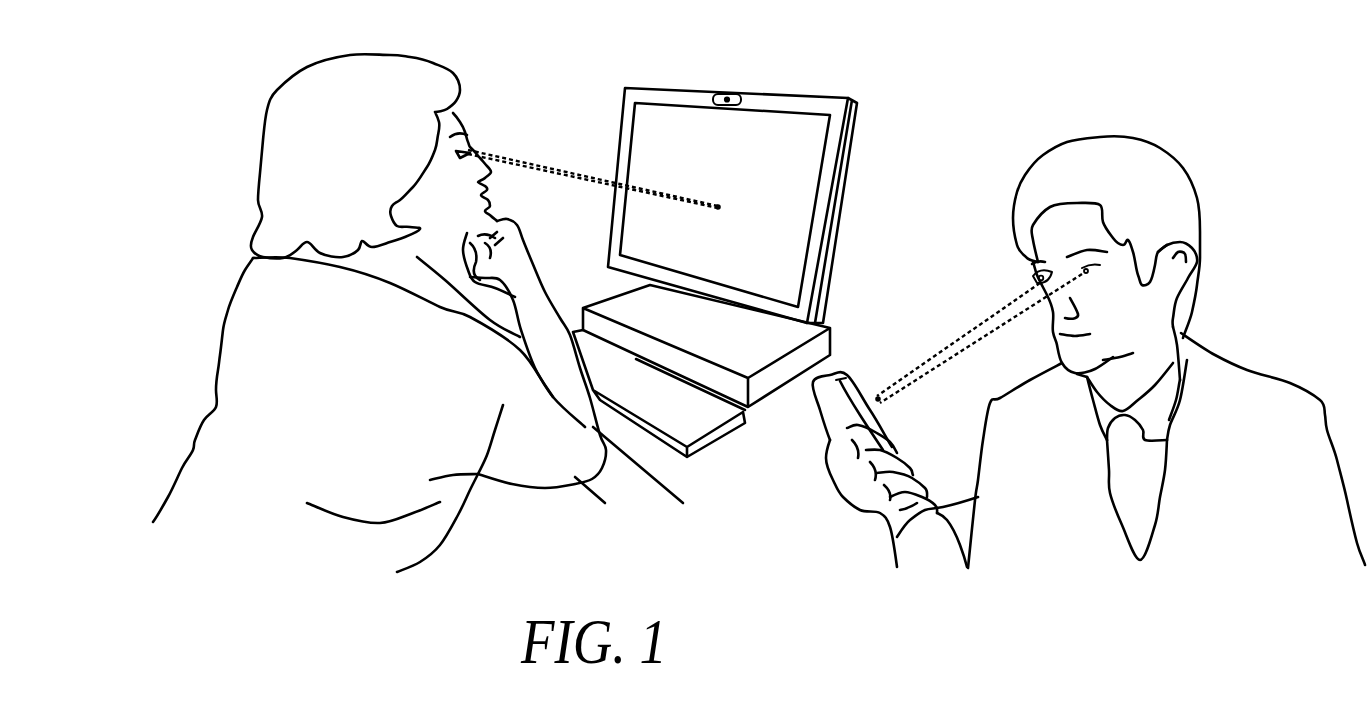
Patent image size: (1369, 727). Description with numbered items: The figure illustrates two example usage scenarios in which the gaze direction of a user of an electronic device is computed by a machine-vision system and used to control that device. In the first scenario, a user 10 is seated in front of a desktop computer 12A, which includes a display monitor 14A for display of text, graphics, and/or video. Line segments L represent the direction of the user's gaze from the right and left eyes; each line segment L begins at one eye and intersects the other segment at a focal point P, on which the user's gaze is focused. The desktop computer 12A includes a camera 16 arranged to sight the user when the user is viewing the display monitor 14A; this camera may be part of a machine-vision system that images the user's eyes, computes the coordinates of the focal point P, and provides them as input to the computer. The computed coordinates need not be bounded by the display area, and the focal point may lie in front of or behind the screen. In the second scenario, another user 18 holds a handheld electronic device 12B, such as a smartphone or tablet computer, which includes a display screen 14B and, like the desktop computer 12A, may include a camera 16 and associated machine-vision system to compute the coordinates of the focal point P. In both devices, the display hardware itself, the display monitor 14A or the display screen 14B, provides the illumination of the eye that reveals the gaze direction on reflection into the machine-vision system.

The user 10 is at (156, 214).
The desktop computer 12A is at (889, 212).
The handheld electronic device 12B is at (838, 417).
The display monitor 14A is at (652, 88).
The display screen 14B is at (882, 381).
The camera 16 is at (725, 107).
The user 18 is at (1310, 250).
The line segments L is at (567, 170).
The focal point P is at (908, 417).